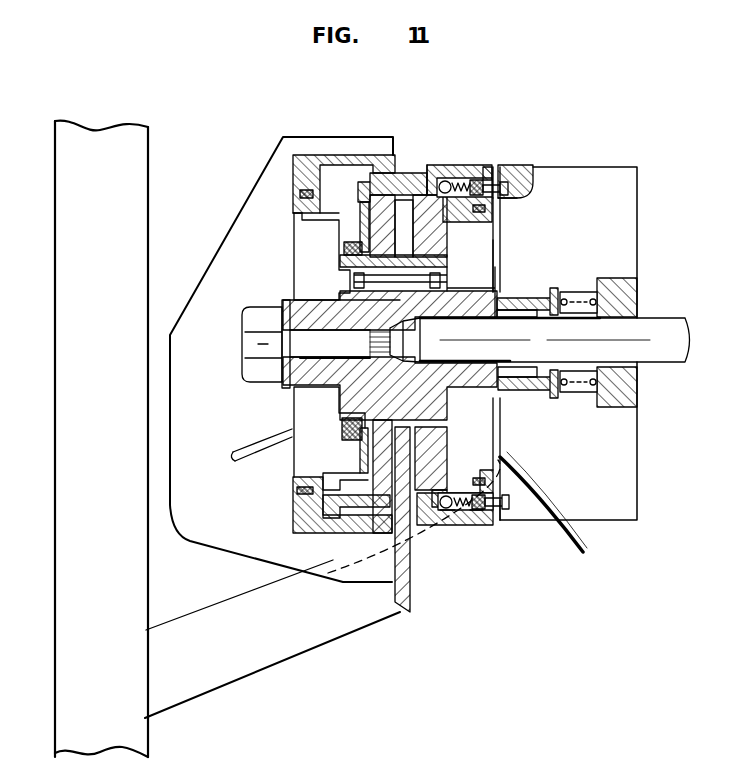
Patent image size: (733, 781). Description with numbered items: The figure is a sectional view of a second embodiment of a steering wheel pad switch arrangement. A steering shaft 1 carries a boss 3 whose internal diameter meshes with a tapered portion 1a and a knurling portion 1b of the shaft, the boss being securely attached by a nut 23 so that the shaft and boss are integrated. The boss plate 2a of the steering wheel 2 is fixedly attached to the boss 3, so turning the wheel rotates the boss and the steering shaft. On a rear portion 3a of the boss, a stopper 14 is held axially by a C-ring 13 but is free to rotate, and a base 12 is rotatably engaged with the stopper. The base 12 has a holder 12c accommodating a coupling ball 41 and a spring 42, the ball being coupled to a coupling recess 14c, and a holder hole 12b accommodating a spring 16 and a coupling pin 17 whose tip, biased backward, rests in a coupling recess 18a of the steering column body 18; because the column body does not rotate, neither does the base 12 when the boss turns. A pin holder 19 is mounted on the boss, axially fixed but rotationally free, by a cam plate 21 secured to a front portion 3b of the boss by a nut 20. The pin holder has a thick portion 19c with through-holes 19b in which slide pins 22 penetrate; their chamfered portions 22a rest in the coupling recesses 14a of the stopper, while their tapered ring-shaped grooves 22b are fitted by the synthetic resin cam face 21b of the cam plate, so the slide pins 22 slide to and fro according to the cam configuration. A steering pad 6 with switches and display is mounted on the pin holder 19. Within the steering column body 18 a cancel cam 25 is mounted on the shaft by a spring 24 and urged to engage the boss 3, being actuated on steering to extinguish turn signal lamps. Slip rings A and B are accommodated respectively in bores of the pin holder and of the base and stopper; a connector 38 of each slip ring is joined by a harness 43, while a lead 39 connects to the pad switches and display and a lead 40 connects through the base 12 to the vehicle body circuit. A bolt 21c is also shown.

The steering shaft 1 is at (638, 338).
The tapered portion 1a is at (498, 403).
The knurling portion 1b is at (495, 420).
The steering wheel 2 is at (62, 320).
The boss plate 2a is at (406, 575).
The boss 3 is at (349, 282).
The rear portion 3a is at (500, 307).
The front portion 3b is at (288, 330).
The steering pad 6 is at (212, 552).
The base 12 is at (490, 178).
The holder hole 12b is at (503, 170).
The holder 12c is at (482, 165).
The C-ring 13 is at (500, 228).
The stopper 14 is at (452, 178).
The coupling recesses 14a is at (438, 180).
The coupling recess 14c is at (463, 176).
The spring 16 is at (478, 182).
The coupling pin 17 is at (505, 177).
The steering column body 18 is at (608, 233).
The coupling recess 18a is at (522, 522).
The pin holder 19 is at (302, 162).
The through-holes 19b is at (402, 200).
The thick portion 19c is at (374, 177).
The nut 20 is at (300, 440).
The cam plate 21 is at (342, 204).
The cam face 21b is at (318, 488).
The bolt 21c is at (345, 424).
The slide pins 22 is at (400, 163).
The chamfered portions 22a is at (395, 560).
The ring-shaped grooves 22b is at (337, 520).
The nut 23 is at (262, 340).
The spring 24 is at (598, 303).
The cancel cam 25 is at (557, 397).
The connector 38 is at (319, 265).
The lead 39 is at (242, 450).
The lead 40 is at (590, 537).
The coupling ball 41 is at (440, 524).
The spring 42 is at (470, 524).
The harness 43 is at (307, 254).
The slip ring A is at (330, 217).
The slip ring B is at (487, 272).